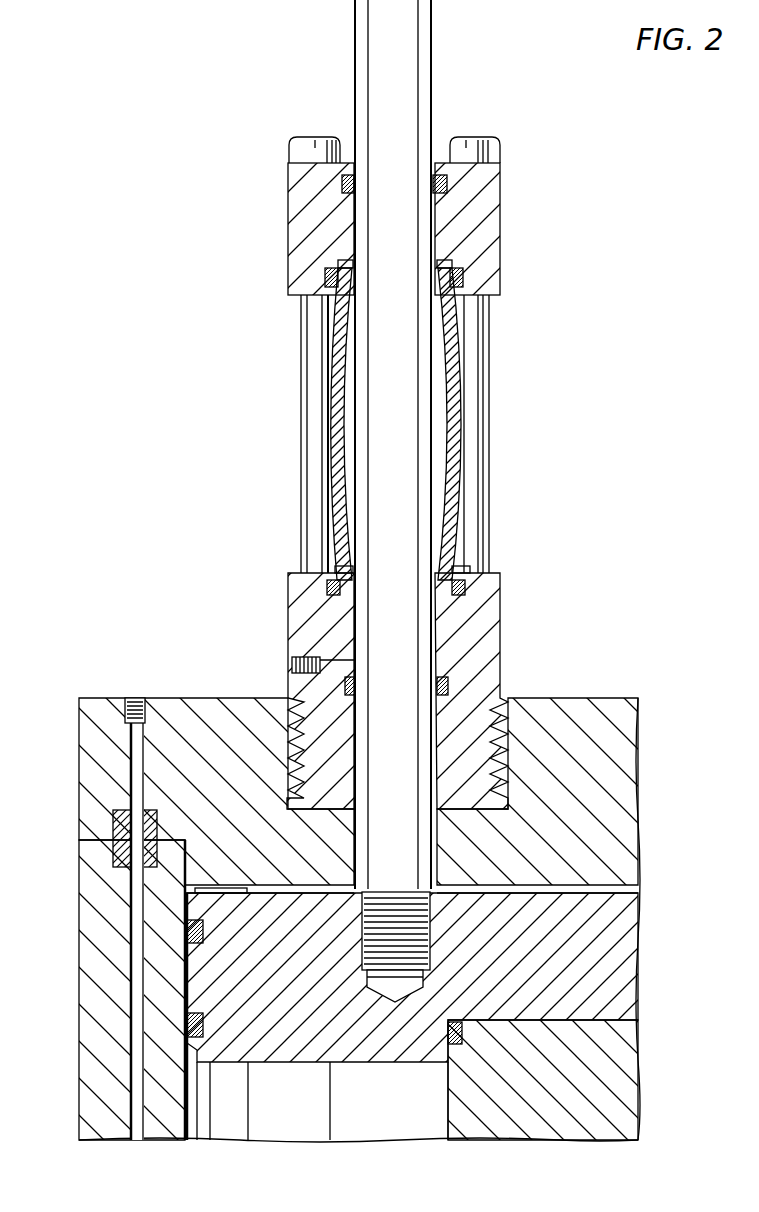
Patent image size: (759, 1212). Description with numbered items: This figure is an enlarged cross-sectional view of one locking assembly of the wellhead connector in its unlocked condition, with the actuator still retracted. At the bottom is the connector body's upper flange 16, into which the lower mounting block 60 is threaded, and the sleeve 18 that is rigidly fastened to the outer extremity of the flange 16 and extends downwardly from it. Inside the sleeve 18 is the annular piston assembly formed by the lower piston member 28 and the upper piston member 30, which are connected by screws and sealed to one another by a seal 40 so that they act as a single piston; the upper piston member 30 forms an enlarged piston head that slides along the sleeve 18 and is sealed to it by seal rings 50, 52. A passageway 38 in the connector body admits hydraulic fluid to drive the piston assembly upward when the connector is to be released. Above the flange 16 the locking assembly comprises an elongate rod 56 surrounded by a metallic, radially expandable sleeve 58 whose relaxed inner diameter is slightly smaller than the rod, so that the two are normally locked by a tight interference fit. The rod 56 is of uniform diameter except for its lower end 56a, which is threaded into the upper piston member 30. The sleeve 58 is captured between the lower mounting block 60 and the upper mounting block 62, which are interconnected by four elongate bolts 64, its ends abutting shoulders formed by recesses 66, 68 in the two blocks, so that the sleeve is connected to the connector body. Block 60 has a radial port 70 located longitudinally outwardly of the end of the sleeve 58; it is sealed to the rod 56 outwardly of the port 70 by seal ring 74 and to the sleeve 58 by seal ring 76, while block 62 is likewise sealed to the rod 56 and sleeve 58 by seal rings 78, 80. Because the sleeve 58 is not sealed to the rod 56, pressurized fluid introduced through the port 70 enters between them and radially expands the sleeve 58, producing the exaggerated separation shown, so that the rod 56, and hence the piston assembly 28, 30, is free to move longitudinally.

The upper flange 16 is at (612, 705).
The sleeve 18 is at (100, 977).
The lower piston member 28 is at (617, 1090).
The upper piston member 30 is at (297, 1038).
The passageway 38 is at (134, 1113).
The seal 40 is at (447, 1045).
The seal ring 50 is at (185, 930).
The seal ring 52 is at (185, 1023).
The elongate rod 56 is at (423, 50).
The lower end of rod 56a is at (427, 935).
The sleeve 58 is at (459, 333).
The lower mounting block 60 is at (300, 600).
The upper mounting block 62 is at (300, 215).
The elongate bolts 64 is at (307, 423).
The recess 66 is at (452, 263).
The recess 68 is at (466, 590).
The radial port 70 is at (292, 677).
The seal ring 74 is at (450, 687).
The seal ring 76 is at (488, 570).
The seal ring 78 is at (342, 183).
The seal ring 80 is at (326, 277).